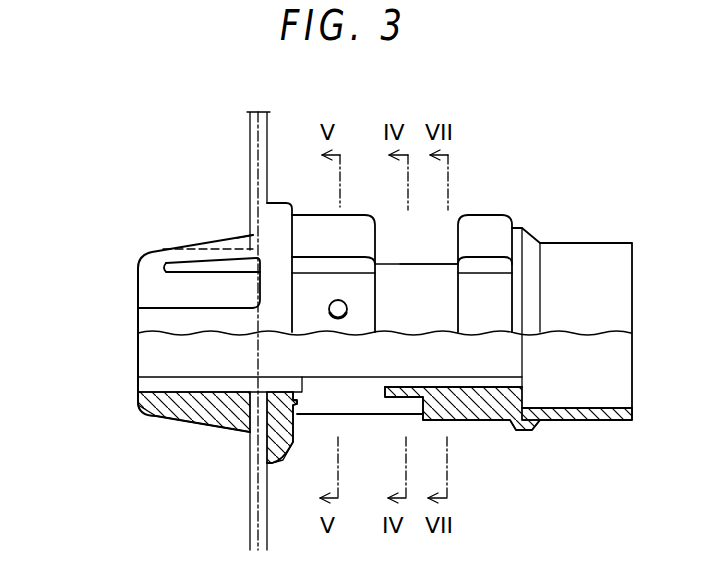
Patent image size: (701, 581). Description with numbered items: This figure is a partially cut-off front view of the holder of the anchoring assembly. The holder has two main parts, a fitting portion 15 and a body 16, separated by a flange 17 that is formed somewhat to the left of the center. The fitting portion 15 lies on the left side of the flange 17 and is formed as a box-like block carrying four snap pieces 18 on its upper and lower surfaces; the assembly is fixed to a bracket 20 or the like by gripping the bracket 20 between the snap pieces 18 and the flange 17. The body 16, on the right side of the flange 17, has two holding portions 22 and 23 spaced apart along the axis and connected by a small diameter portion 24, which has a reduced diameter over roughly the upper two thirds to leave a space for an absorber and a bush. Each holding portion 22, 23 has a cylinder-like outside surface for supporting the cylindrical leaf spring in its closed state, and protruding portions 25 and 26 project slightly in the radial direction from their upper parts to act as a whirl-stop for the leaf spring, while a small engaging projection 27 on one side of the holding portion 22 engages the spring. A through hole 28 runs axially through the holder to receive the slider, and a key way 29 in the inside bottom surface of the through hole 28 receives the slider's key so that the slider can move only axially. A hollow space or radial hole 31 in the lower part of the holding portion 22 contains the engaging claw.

The fitting portion 15 is at (165, 228).
The body 16 is at (537, 228).
The flange 17 is at (281, 203).
The snap pieces 18 is at (237, 235).
The bracket 20 is at (255, 140).
The holding portion 22 is at (360, 296).
The holding portion 23 is at (500, 298).
The small diameter portion 24 is at (420, 285).
The protruding portion 25 is at (352, 220).
The protruding portion 26 is at (493, 222).
The engaging projection 27 is at (336, 299).
The through hole 28 is at (485, 358).
The key way 29 is at (188, 392).
The radial hole 31 is at (360, 394).